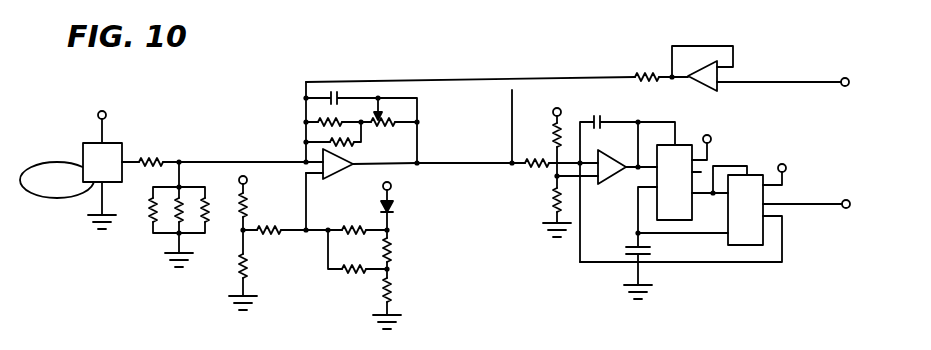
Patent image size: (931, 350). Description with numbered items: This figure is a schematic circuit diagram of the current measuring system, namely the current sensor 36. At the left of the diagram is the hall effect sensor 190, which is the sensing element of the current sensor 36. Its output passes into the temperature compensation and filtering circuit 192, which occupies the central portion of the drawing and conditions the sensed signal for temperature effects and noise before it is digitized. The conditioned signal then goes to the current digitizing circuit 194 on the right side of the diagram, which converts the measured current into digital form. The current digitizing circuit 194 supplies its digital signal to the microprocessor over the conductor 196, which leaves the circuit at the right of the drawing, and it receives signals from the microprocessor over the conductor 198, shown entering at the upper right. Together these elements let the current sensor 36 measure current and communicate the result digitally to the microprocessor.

The current sensor 36 is at (448, 62).
The hall effect sensor 190 is at (65, 209).
The temperature compensation and filtering circuit 192 is at (411, 214).
The current digitizing circuit 194 is at (712, 278).
The conductor 196 is at (813, 208).
The conductor 198 is at (790, 82).